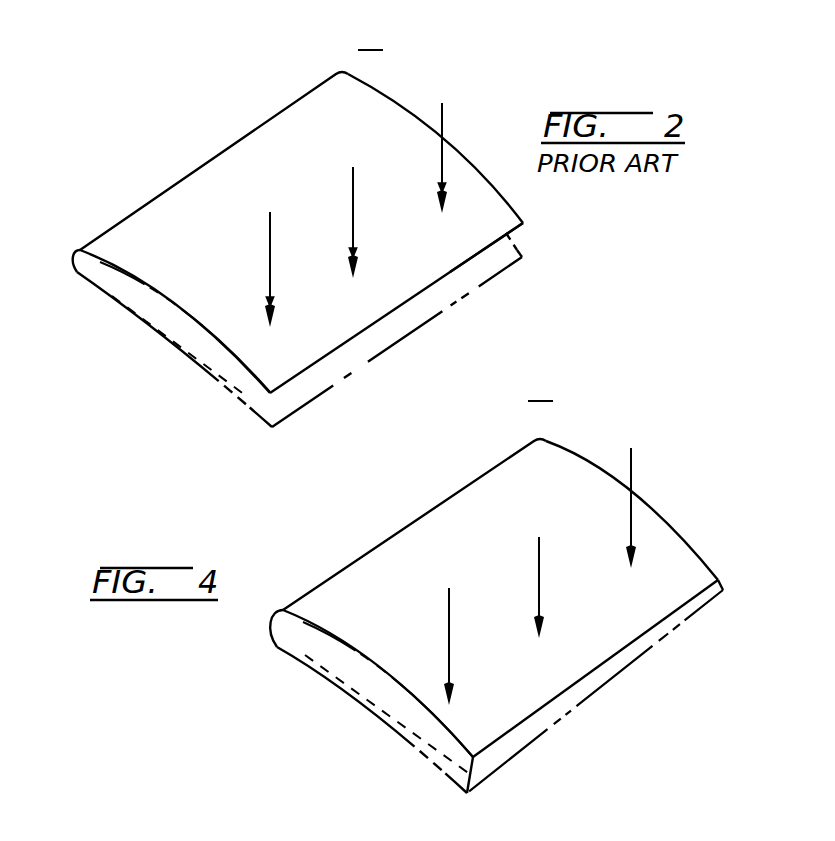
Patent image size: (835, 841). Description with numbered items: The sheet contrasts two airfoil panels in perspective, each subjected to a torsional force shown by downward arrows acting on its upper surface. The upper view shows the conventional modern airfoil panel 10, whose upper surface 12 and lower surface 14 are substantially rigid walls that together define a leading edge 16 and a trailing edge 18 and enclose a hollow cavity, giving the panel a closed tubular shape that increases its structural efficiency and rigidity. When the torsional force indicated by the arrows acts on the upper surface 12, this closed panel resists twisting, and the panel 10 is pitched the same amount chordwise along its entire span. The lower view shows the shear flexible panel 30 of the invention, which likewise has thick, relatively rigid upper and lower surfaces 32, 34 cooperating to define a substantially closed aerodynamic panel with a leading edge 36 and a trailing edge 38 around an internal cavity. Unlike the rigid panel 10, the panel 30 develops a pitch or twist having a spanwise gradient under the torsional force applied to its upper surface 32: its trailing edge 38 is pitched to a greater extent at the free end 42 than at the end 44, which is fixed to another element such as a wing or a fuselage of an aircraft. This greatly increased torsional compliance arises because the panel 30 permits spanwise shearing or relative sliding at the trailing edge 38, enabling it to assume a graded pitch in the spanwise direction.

In FIG. 2, the conventional airfoil panel 10 is at (299, 226).
In FIG. 2, the upper surface 12 is at (459, 155).
In FIG. 2, the lower surface 14 is at (180, 352).
In FIG. 2, the leading edge 16 is at (74, 258).
In FIG. 2, the trailing edge 18 is at (525, 225).
In FIG. 4, the shear flexible panel 30 is at (513, 596).
In FIG. 4, the upper surface 32 is at (648, 522).
In FIG. 4, the lower surface 34 is at (340, 688).
In FIG. 4, the leading edge 36 is at (273, 625).
In FIG. 4, the trailing edge 38 is at (717, 578).
In FIG. 4, the free end 42 is at (460, 778).
In FIG. 4, the fixed end 44 is at (725, 583).